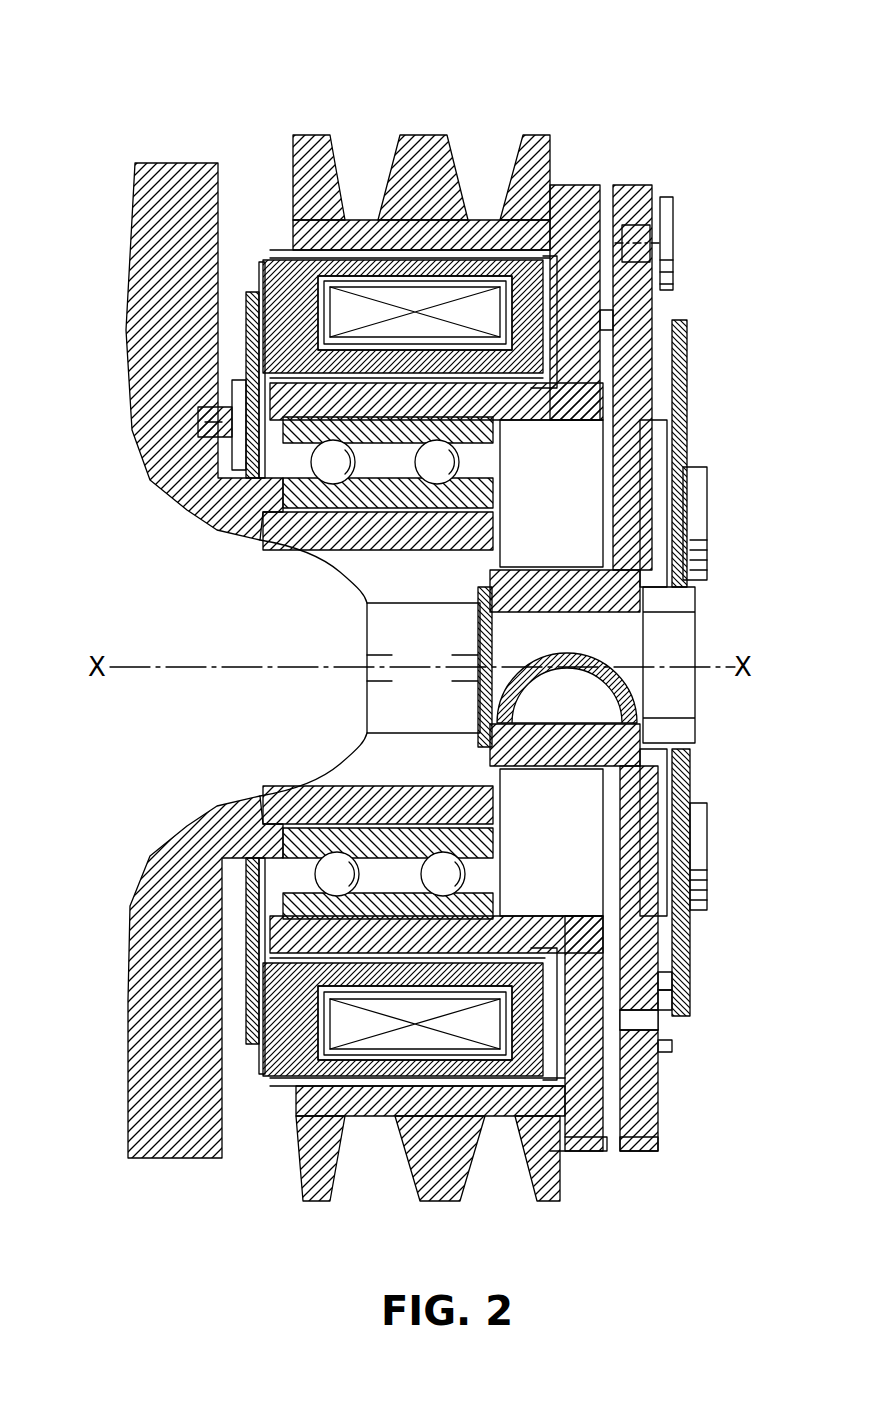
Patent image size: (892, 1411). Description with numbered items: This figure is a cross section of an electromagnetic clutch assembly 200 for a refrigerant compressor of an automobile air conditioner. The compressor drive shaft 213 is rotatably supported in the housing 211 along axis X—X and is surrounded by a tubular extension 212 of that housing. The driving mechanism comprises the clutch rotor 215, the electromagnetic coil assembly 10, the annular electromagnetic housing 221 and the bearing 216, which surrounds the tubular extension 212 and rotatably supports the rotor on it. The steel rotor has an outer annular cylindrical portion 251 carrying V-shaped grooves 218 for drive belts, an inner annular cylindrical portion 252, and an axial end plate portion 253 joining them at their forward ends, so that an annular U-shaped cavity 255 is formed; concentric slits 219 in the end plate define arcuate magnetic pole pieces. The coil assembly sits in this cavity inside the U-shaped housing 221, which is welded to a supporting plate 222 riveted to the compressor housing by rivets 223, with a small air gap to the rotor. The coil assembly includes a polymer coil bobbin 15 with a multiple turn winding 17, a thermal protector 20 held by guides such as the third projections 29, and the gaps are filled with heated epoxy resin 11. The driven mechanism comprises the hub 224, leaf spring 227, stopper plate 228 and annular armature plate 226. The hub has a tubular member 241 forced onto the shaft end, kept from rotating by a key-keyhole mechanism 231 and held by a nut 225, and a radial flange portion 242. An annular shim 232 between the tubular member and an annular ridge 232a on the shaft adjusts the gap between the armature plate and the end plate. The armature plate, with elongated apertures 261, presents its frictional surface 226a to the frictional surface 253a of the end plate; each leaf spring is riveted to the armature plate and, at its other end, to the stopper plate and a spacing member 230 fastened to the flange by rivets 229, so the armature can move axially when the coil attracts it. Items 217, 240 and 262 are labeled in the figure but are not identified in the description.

The electromagnetic clutch assembly 200 is at (409, 92).
The electromagnetic coil assembly 10 is at (567, 185).
The heated epoxy resin 11 is at (355, 318).
The coil bobbin 15 is at (263, 375).
The multiple turn winding 17 is at (330, 354).
The thermal protector 20 is at (658, 1002).
The third projections 29 is at (680, 980).
The housing 211 is at (165, 183).
The tubular extension 212 is at (340, 570).
The compressor drive shaft 213 is at (318, 651).
The clutch rotor 215 is at (432, 135).
The bearing 216 is at (268, 527).
The rotor inner cylinder 217 is at (537, 955).
The V-shaped grooves 218 is at (398, 165).
The concentric slits 219 is at (692, 948).
The annular electromagnetic housing 221 is at (262, 260).
The supporting plate 222 is at (250, 290).
The rivets 223 is at (205, 420).
The hub 224 is at (647, 600).
The nut 225 is at (680, 645).
The annular armature plate 226 is at (652, 195).
The frictional surface 226a is at (662, 1120).
The leaf spring 227 is at (662, 318).
The stopper plate 228 is at (687, 365).
The rivets 229 is at (705, 517).
The spacing member 230 is at (645, 440).
The key-keyhole mechanism 231 is at (655, 305).
The annular shim 232 is at (482, 600).
The annular ridge 232a is at (482, 718).
The rotor opening 240 is at (603, 793).
The tubular member 241 is at (553, 593).
The flange portion 242 is at (707, 890).
The outer annular cylindrical portion 251 is at (380, 210).
The inner annular cylindrical portion 252 is at (548, 420).
The axial end plate portion 253 is at (653, 1153).
The frictional surface 253a is at (600, 1150).
The annular U-shaped cavity 255 is at (478, 220).
The elongated apertures 261 is at (648, 322).
The bolt head 262 is at (683, 507).